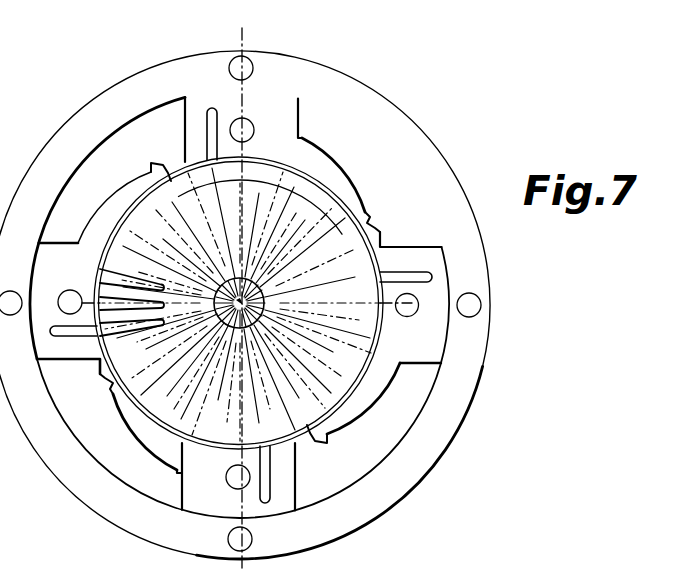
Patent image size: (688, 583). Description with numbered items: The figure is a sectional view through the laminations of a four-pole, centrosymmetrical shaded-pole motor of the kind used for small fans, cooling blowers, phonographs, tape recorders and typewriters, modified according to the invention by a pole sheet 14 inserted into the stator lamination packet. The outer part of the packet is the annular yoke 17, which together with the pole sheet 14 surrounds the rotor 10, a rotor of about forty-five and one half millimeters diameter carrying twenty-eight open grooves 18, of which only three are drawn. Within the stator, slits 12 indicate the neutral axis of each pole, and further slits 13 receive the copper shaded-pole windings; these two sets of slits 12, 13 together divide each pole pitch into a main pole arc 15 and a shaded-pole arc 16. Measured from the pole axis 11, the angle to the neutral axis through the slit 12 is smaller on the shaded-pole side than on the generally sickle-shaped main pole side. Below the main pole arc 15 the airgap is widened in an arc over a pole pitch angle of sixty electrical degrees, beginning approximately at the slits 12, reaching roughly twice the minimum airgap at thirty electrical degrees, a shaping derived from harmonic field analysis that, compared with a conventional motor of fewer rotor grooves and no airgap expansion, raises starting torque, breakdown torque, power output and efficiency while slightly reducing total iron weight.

The rotor 10 is at (362, 322).
The pole axis 11 is at (245, 38).
The slits 12 is at (152, 167).
The slits for the shaded-pole windings 13 is at (214, 110).
The pole sheet 14 is at (280, 125).
The main pole arcs 15 is at (337, 230).
The shaded-pole arcs 16 is at (219, 185).
The annular yoke 17 is at (398, 124).
The open grooves 18 is at (103, 378).